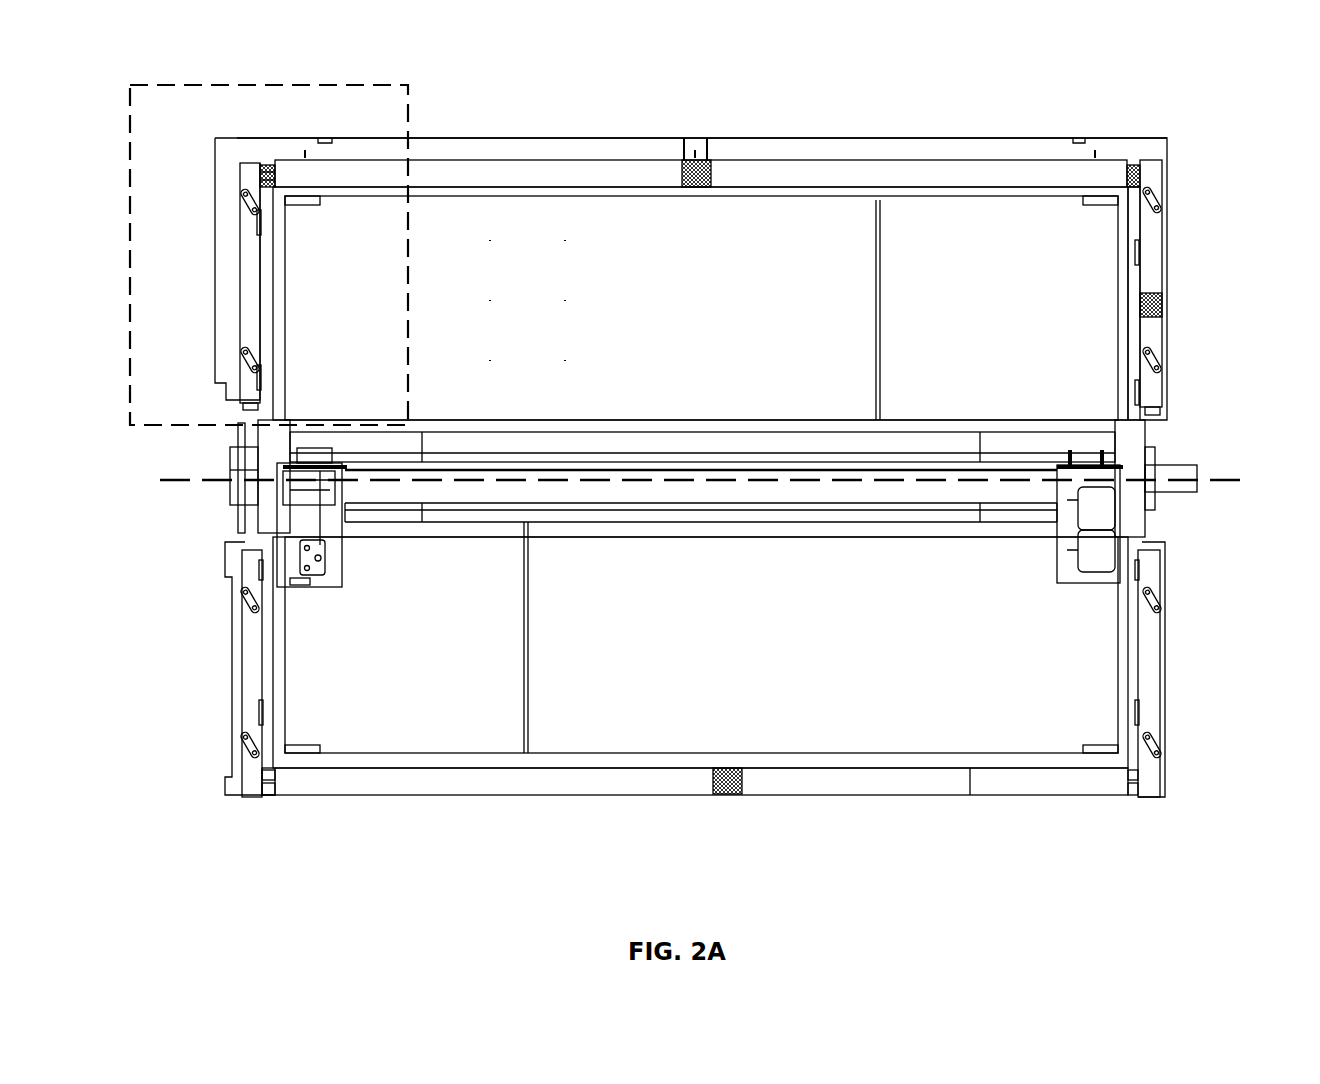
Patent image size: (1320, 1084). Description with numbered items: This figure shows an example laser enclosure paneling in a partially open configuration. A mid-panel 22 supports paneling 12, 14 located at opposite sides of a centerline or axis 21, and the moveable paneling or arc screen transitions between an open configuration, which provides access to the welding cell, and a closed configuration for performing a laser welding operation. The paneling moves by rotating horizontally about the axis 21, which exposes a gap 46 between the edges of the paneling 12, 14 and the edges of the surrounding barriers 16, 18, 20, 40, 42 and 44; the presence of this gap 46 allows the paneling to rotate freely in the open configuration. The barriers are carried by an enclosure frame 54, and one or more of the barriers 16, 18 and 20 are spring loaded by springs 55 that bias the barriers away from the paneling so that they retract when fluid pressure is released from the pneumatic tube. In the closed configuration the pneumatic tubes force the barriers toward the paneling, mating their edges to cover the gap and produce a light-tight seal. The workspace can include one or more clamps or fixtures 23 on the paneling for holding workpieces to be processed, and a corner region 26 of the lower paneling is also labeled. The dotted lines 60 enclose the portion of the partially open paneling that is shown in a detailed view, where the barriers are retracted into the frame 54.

The paneling 12 is at (700, 303).
The paneling 14 is at (700, 645).
The barrier 16 is at (385, 160).
The barrier 18 is at (938, 795).
The barrier 20 is at (1158, 272).
The axis 21 is at (1228, 472).
The mid-panel 22 is at (646, 512).
The clamps or fixtures 23 is at (352, 588).
The corner joint 26 is at (261, 804).
The barrier 40 is at (1160, 652).
The barrier 42 is at (242, 310).
The barrier 44 is at (242, 680).
The gap 46 is at (265, 200).
The enclosure frame 54 is at (585, 138).
The springs 55 is at (712, 160).
The dotted lines 60 is at (414, 74).